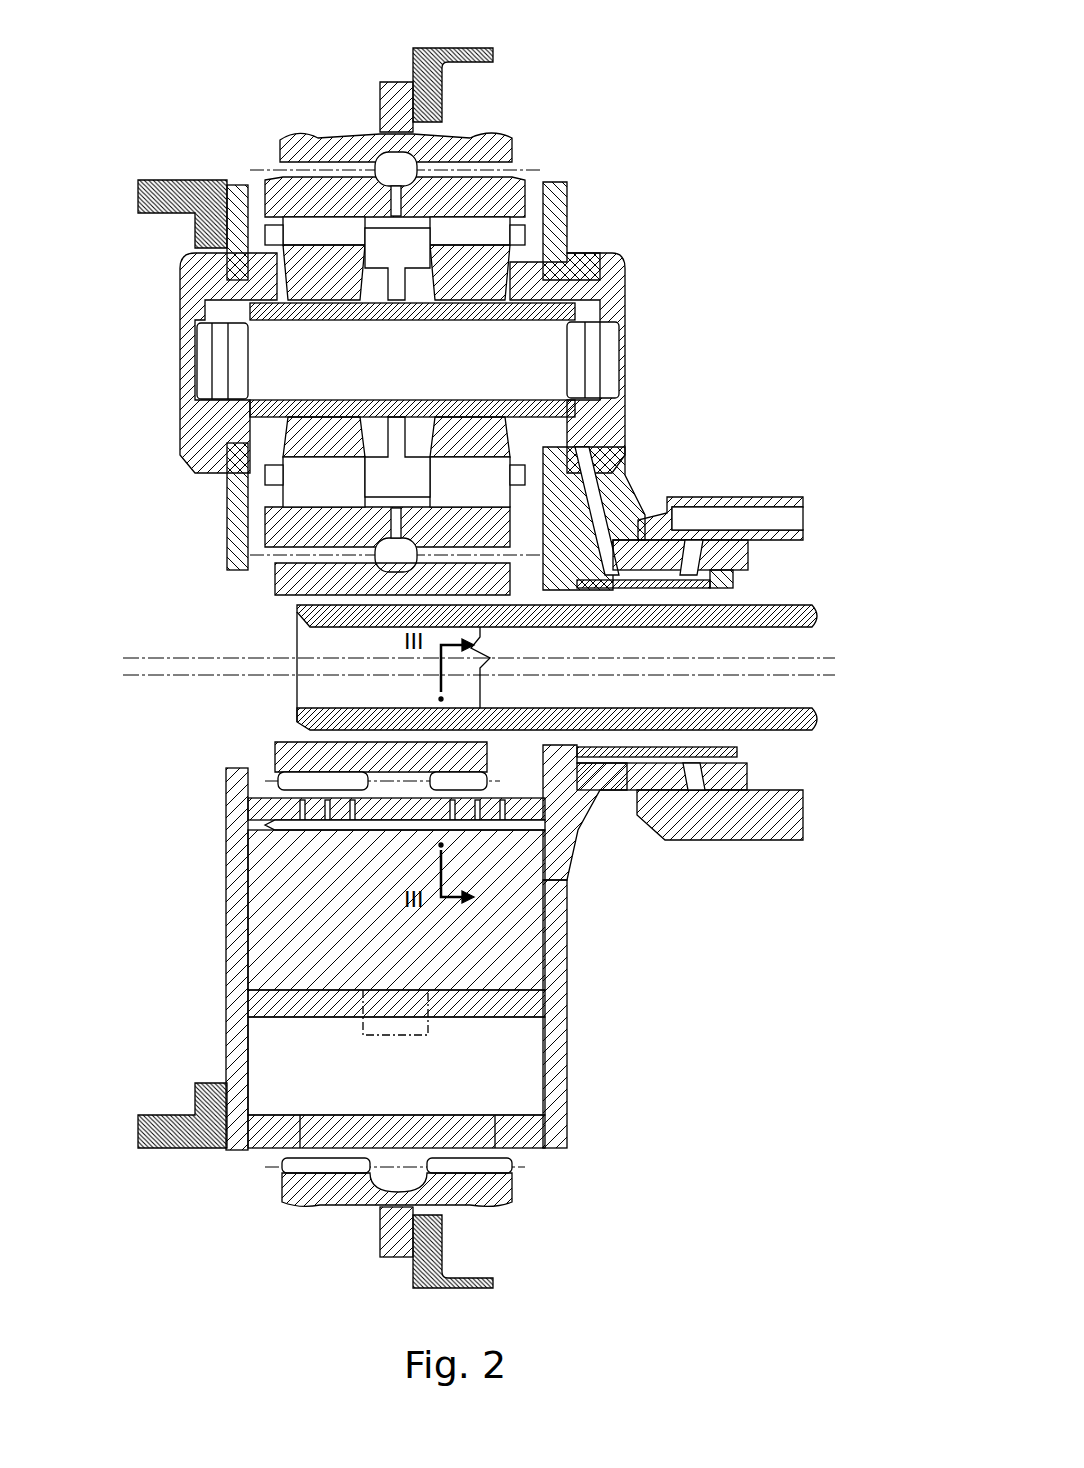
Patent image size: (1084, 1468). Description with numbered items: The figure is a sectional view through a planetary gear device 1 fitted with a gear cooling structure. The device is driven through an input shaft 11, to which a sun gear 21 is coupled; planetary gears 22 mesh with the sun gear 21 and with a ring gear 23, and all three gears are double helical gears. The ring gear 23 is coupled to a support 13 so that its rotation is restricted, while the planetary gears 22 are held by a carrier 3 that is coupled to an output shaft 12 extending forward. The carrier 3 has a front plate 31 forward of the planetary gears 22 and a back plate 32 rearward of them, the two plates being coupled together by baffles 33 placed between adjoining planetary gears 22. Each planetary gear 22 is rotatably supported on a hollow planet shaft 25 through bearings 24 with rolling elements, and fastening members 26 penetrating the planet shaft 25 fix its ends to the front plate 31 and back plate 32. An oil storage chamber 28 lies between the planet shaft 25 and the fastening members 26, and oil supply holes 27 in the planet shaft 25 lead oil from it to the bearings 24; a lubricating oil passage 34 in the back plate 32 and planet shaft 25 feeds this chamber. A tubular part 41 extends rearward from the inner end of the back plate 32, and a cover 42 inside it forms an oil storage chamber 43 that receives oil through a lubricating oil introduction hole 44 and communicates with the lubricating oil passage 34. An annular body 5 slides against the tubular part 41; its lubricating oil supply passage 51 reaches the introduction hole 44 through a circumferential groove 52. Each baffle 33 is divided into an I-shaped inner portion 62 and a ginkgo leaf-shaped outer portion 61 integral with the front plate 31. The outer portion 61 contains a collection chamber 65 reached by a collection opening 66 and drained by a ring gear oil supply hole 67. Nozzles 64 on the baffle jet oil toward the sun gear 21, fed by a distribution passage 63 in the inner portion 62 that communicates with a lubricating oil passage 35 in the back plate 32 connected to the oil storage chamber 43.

The planetary gear device 1 is at (668, 282).
The carrier 3 is at (393, 972).
The annular body 5 is at (731, 478).
The input shaft 11 is at (297, 693).
The output shaft 12 is at (188, 178).
The support 13 is at (412, 52).
The sun gear 21 is at (290, 596).
The planetary gear 22 is at (516, 200).
The ring gear 23 is at (472, 140).
The bearing 24 is at (325, 235).
The planet shaft 25 is at (582, 290).
The fastening member 26 is at (616, 355).
The oil supply hole 27 is at (350, 300).
The oil storage chamber 28 is at (405, 412).
The front plate 31 is at (234, 962).
The back plate 32 is at (562, 1125).
The baffle 33 is at (482, 934).
The lubricating oil passage 34 is at (600, 510).
The lubricating oil passage 35 is at (596, 803).
The tubular part 41 is at (750, 780).
The cover 42 is at (740, 752).
The oil storage chamber 43 is at (700, 588).
The lubricating oil introduction hole 44 is at (748, 560).
The lubricating oil supply passage 51 is at (806, 518).
The groove 52 is at (695, 540).
The outer portion 61 is at (480, 1020).
The inner portion 62 is at (485, 965).
The distribution passage 63 is at (495, 900).
The nozzle 64 is at (300, 812).
The collection chamber 65 is at (287, 1053).
The collection opening 66 is at (407, 1036).
The ring gear oil supply hole 67 is at (262, 1150).